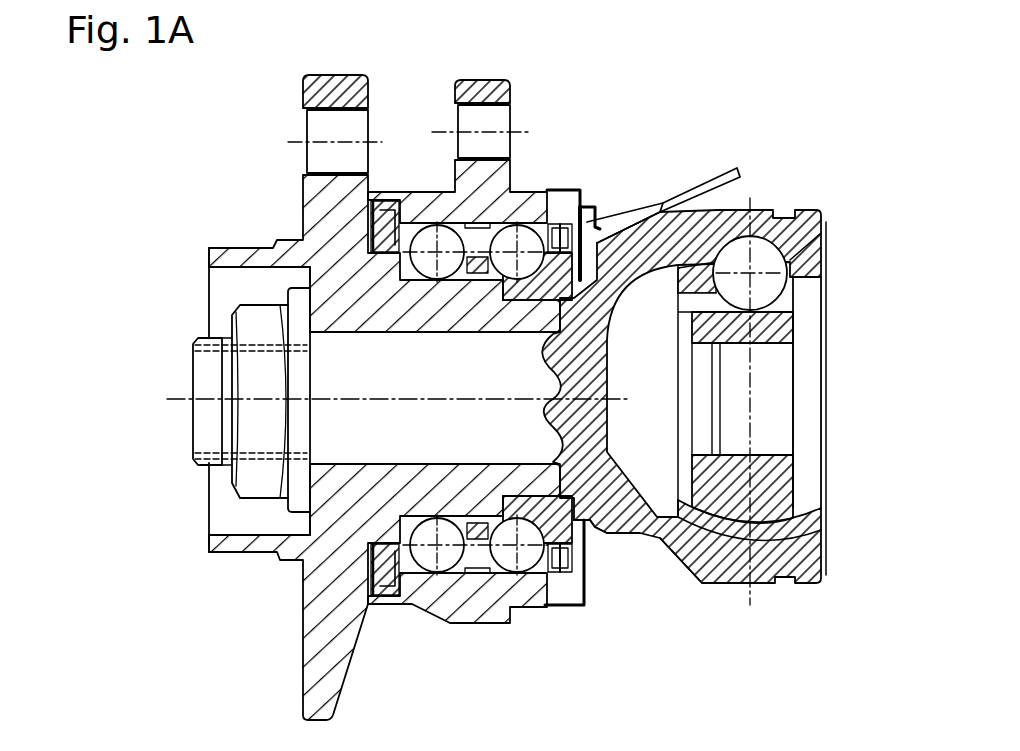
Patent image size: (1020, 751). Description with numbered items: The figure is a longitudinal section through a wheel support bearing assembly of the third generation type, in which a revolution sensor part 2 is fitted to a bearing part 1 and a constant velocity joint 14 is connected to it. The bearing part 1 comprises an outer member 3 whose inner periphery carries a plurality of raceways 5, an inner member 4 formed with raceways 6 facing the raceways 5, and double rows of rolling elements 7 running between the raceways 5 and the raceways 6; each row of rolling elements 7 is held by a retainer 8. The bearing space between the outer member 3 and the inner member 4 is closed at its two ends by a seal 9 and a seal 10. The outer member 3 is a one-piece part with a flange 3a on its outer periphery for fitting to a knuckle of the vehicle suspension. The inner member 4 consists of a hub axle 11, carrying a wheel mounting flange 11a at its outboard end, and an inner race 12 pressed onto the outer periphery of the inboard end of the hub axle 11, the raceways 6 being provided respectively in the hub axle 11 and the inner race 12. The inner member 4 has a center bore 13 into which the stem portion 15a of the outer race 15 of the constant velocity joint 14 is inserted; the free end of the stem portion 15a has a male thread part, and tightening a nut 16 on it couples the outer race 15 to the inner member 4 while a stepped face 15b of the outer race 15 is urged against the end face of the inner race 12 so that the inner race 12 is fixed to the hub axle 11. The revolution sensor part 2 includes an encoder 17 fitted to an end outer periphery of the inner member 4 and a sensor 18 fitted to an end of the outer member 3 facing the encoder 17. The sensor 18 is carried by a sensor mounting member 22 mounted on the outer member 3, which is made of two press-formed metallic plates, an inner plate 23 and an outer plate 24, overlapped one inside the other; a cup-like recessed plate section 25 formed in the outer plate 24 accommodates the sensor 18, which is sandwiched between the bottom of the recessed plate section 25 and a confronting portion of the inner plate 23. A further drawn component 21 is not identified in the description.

The bearing part 1 is at (268, 192).
The revolution sensor part 2 is at (608, 206).
The outer member 3 is at (440, 190).
The flange 3a is at (485, 91).
The inner member 4 is at (112, 306).
The raceways 5 is at (413, 600).
The raceways 6 is at (382, 600).
The rolling elements 7 is at (447, 558).
The retainer 8 is at (338, 625).
The seal 9 is at (303, 568).
The seal 10 is at (585, 533).
The hub axle 11 is at (397, 299).
The wheel mounting flange 11a is at (320, 95).
The inner race 12 is at (412, 362).
The center bore 13 is at (292, 433).
The constant velocity joint 14 is at (814, 595).
The outer race 15 is at (732, 573).
The stem portion 15a is at (258, 562).
The stepped face 15b is at (590, 558).
The nut 16 is at (242, 472).
The encoder 17 is at (547, 188).
The sensor 18 is at (598, 229).
The boot band 21 is at (714, 176).
The sensor mounting member 22 is at (569, 188).
The inner plate 23 is at (574, 608).
The outer plate 24 is at (565, 578).
The recessed plate section 25 is at (589, 204).